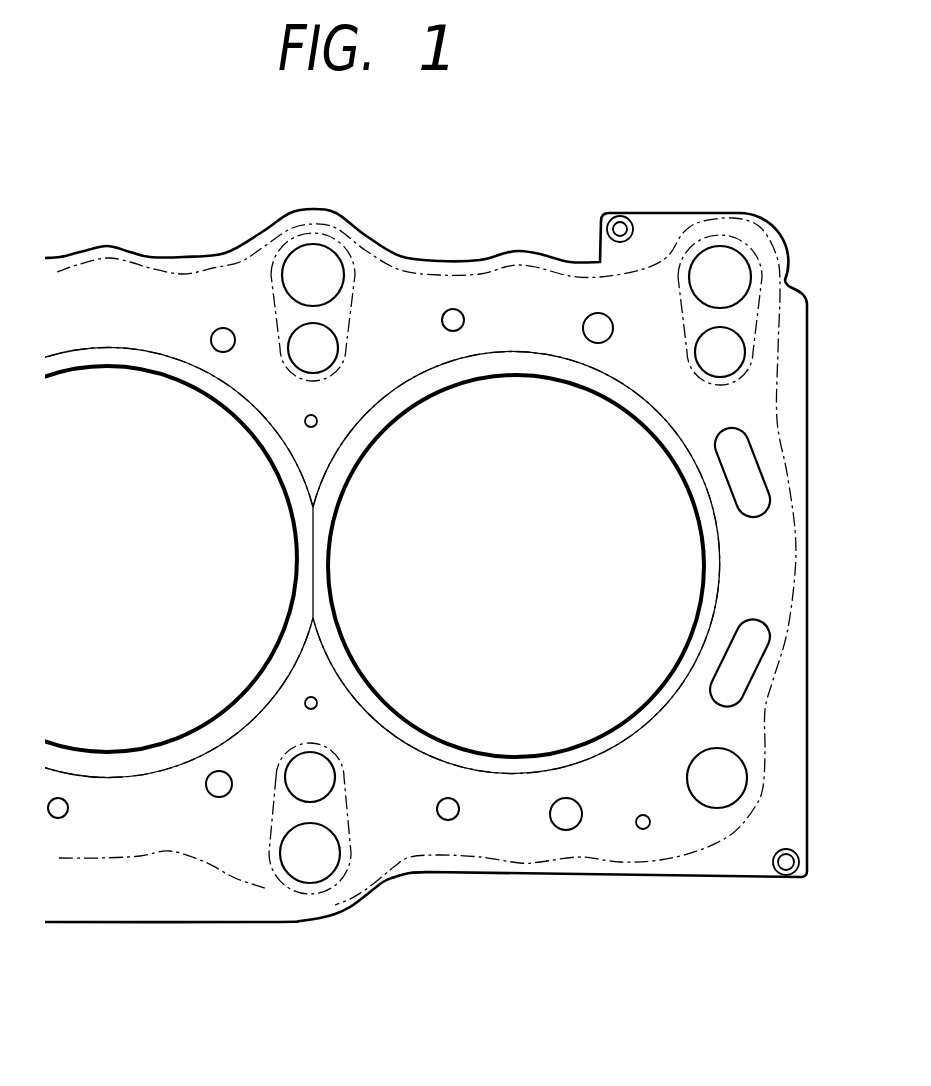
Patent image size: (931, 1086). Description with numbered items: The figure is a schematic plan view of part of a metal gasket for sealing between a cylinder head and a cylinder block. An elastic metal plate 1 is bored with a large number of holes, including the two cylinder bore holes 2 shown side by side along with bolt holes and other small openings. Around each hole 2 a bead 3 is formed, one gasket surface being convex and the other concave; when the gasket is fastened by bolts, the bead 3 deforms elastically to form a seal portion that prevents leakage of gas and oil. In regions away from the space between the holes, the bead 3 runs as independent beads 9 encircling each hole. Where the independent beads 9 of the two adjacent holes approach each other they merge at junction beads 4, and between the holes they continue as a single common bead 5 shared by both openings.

The elastic metal plate 1 is at (183, 297).
The cylinder bore holes 2 is at (688, 552).
The bead 3 is at (248, 424).
The junction beads 4 is at (313, 507).
The common bead 5 is at (312, 565).
The independent beads 9 is at (140, 353).